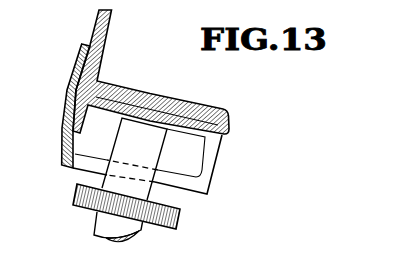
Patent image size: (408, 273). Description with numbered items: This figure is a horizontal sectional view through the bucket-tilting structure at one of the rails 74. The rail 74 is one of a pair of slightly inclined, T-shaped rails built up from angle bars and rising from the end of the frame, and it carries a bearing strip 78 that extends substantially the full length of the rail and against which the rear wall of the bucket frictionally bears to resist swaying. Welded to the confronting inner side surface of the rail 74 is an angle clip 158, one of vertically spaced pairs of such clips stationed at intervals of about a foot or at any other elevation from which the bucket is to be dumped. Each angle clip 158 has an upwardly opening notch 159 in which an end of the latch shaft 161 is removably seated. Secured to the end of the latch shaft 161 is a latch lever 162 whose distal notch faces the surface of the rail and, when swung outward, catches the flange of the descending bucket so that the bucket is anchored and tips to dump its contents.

The inclined rail 74 is at (219, 110).
The bearing strip 78 is at (68, 88).
The angle clip 158 is at (204, 178).
The notch 159 is at (168, 180).
The latch lever 162 is at (179, 223).
The latch shaft 161 is at (139, 235).